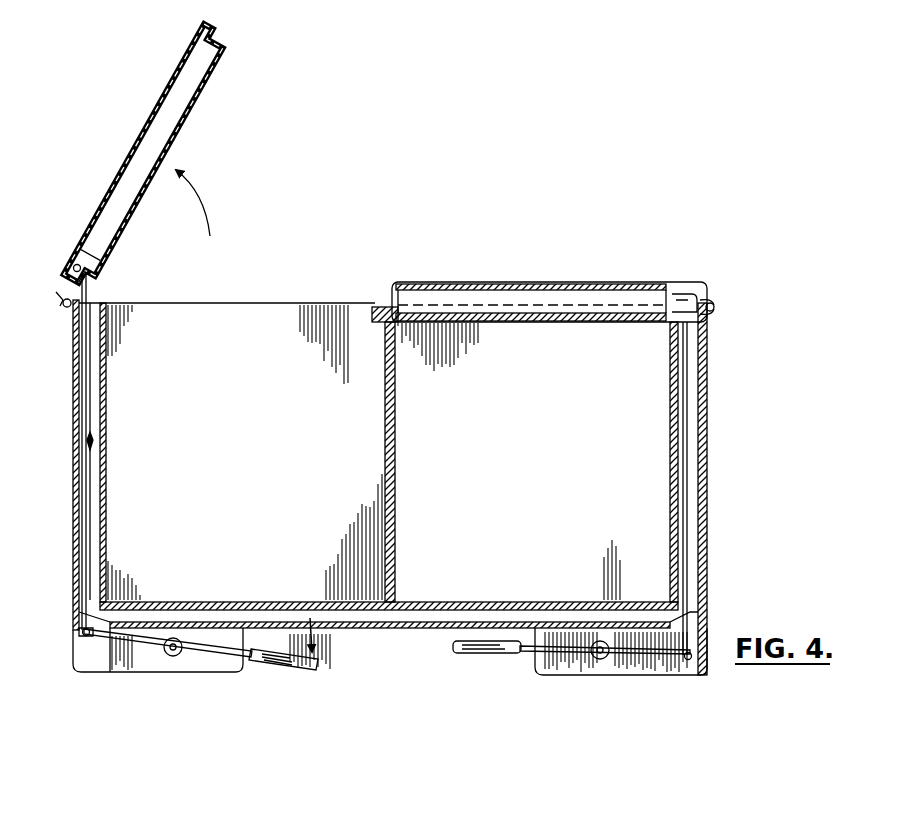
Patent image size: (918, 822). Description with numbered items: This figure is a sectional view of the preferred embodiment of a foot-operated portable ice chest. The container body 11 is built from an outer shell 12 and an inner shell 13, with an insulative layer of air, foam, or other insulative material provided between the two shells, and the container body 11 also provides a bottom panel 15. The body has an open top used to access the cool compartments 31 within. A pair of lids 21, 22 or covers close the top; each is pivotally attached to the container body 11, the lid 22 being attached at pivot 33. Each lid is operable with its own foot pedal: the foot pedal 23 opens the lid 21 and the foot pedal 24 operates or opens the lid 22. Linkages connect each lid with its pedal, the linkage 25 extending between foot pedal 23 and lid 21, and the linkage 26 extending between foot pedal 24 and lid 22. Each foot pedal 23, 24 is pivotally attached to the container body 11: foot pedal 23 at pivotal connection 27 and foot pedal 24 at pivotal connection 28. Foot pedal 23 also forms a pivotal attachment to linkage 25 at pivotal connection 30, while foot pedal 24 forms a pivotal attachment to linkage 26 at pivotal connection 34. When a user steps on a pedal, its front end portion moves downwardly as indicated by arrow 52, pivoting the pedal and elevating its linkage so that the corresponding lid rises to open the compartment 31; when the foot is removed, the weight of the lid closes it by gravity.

The container body 11 is at (705, 475).
The outer shell 12 is at (73, 520).
The inner shell 13 is at (106, 440).
The bottom panel 15 is at (232, 602).
The lid 21 is at (123, 160).
The lid 22 is at (535, 282).
The foot pedal 23 is at (296, 672).
The foot pedal 24 is at (460, 655).
The linkage 25 is at (83, 383).
The linkage 26 is at (690, 397).
The pivotal connection 27 is at (173, 660).
The pivotal connection 28 is at (600, 662).
The pivotal connection 30 is at (88, 650).
The cool compartment 31 is at (206, 326).
The pivot 33 is at (714, 304).
The pivotal connection 34 is at (690, 660).
The arrow 52 is at (317, 643).